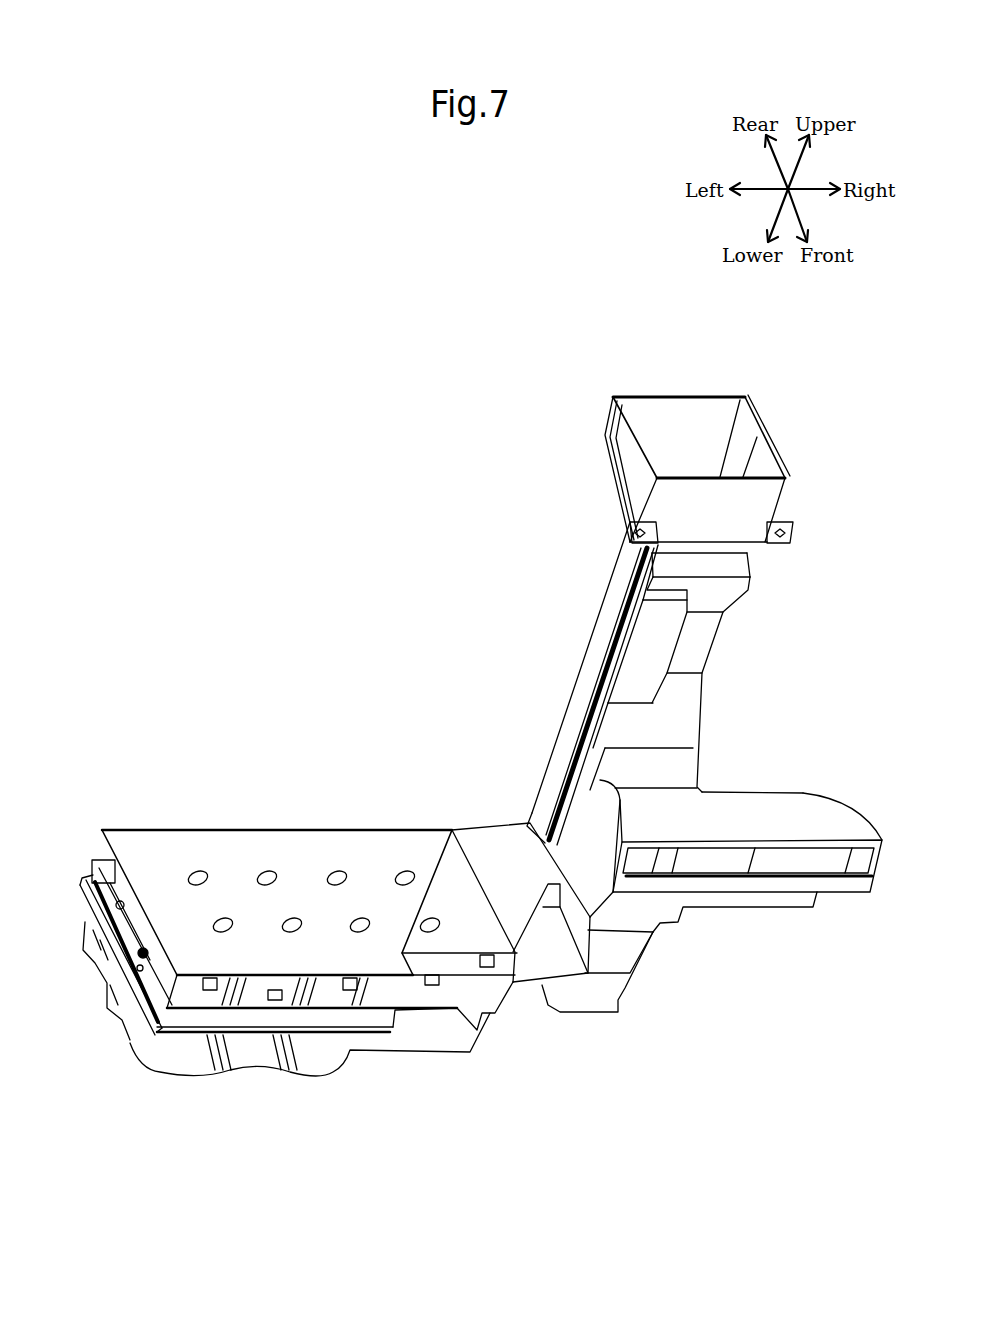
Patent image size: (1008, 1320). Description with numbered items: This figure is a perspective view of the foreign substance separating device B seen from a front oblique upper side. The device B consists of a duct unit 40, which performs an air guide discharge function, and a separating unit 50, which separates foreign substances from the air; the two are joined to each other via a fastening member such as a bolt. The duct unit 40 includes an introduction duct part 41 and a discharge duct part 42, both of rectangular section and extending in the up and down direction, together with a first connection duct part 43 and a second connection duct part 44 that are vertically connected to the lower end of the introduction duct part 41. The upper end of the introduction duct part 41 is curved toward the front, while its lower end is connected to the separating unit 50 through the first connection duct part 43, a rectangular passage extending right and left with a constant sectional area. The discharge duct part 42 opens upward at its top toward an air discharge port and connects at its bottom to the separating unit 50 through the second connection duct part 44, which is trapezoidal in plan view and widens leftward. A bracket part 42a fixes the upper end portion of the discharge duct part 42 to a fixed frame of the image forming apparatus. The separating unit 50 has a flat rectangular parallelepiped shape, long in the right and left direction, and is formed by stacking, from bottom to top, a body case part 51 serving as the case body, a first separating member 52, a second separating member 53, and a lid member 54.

The foreign substance separating device B is at (332, 685).
The duct unit 40 is at (695, 393).
The introduction duct part 41 is at (760, 813).
The discharge duct part 42 is at (758, 507).
The bracket part 42a is at (633, 535).
The first connection duct part 43 is at (556, 997).
The second connection duct part 44 is at (503, 855).
The separating unit 50 is at (245, 801).
The body case part 51 is at (150, 1047).
The first separating member 52 is at (192, 1017).
The second separating member 53 is at (103, 842).
The lid member 54 is at (157, 843).